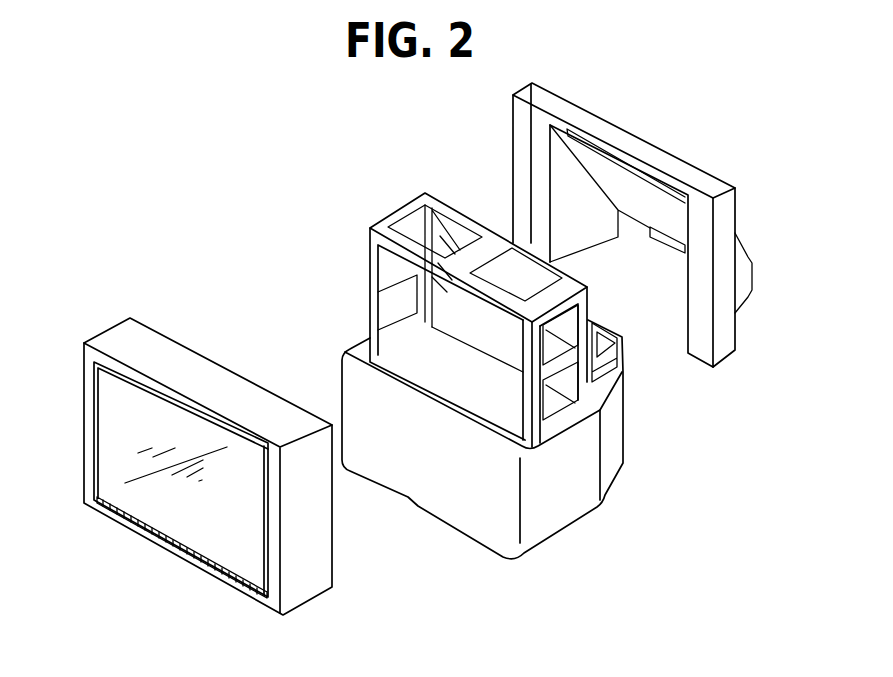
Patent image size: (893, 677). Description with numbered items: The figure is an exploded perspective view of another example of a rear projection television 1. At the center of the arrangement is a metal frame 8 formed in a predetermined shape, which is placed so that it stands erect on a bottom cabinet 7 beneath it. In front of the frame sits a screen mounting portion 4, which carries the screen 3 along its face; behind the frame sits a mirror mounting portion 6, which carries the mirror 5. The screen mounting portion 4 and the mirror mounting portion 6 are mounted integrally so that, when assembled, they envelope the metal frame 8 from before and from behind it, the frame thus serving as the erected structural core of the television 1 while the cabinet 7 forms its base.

The rear projection television 1 is at (282, 214).
The screen 3 is at (183, 528).
The screen mounting portion 4 is at (210, 370).
The mirror 5 is at (647, 192).
The mirror mounting portion 6 is at (733, 327).
The bottom cabinet 7 is at (567, 490).
The metal frame 8 is at (372, 226).